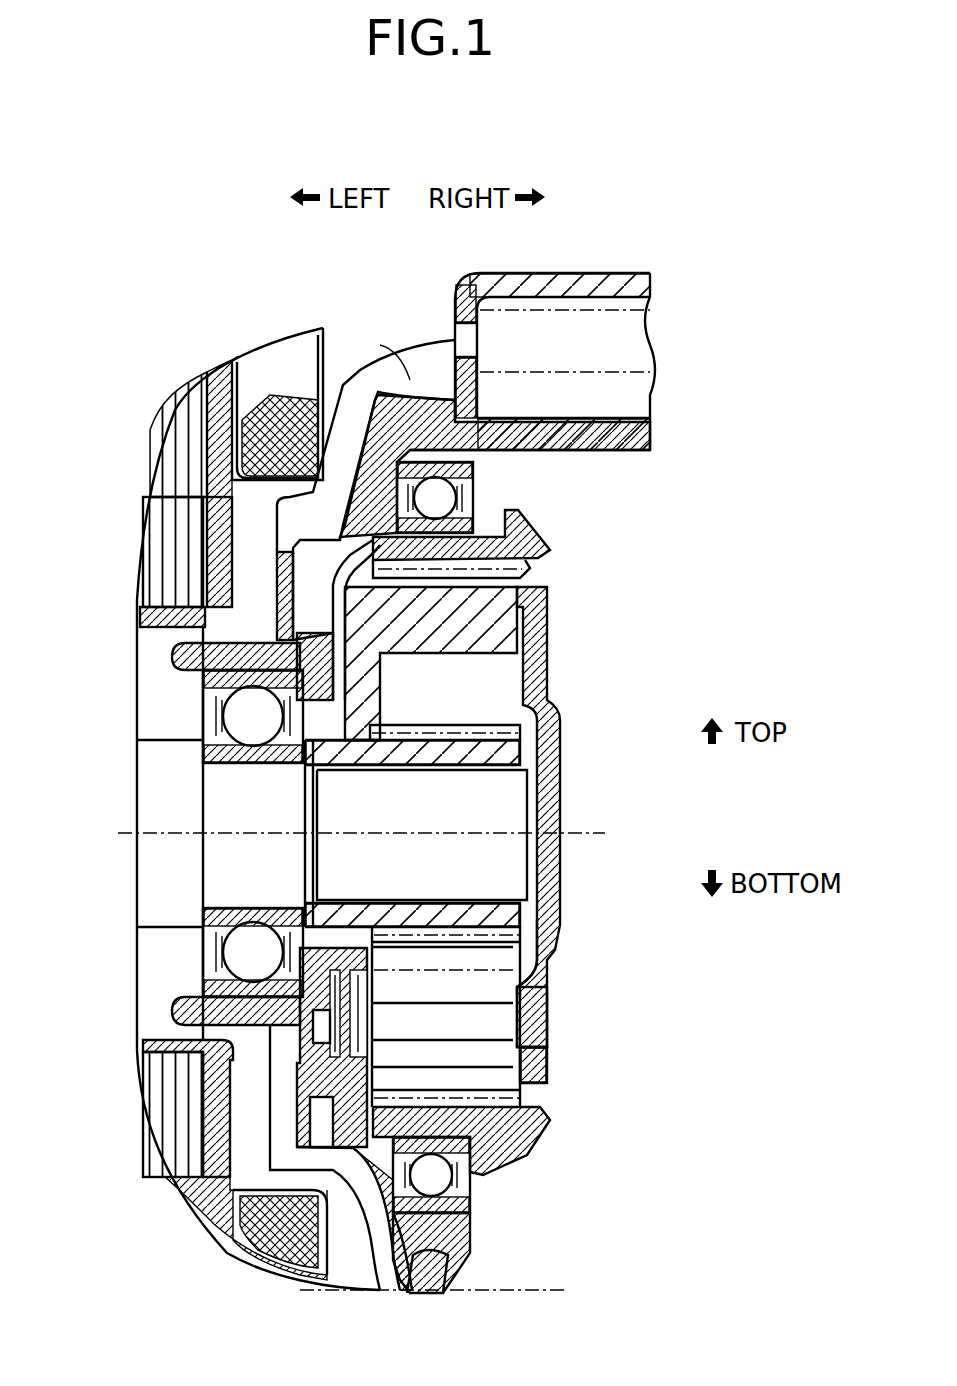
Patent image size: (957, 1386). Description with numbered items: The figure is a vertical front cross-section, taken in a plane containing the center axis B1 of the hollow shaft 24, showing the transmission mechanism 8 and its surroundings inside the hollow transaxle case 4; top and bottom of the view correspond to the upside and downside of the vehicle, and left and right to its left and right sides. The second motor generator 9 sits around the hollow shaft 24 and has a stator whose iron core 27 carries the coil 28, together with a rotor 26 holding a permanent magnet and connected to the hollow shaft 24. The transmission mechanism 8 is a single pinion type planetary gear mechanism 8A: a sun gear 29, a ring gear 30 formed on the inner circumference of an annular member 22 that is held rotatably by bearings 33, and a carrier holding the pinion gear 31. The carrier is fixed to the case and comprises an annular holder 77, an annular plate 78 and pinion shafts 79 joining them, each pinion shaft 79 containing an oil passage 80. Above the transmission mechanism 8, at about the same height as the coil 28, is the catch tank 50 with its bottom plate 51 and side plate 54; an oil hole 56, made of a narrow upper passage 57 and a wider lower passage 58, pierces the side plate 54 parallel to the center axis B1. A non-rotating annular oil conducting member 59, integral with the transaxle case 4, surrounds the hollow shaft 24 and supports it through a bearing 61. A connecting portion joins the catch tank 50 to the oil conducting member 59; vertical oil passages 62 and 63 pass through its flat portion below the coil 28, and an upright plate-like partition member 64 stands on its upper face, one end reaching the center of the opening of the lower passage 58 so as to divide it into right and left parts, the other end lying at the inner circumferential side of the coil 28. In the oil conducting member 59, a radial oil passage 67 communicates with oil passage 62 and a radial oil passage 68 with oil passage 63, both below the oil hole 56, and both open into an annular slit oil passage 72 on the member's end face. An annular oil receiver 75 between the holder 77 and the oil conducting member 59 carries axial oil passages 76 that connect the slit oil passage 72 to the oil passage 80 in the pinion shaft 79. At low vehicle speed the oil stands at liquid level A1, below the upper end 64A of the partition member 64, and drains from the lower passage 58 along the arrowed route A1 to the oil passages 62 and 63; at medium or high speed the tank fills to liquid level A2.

The second motor generator 9 is at (172, 372).
The coil 28 is at (280, 357).
The upper end of partition member 64A is at (413, 360).
The upper passage 57 is at (460, 333).
The oil hole 56 is at (437, 333).
The lower passage 58 is at (417, 393).
The catch tank 50 is at (596, 262).
The liquid level A2 is at (637, 307).
The side plate 54 is at (563, 369).
The liquid level A1 is at (630, 367).
The bottom plate 51 is at (587, 433).
The iron core 27 is at (187, 433).
The bearing 33 is at (488, 477).
The rotor 26 is at (200, 508).
The partition member 64 is at (320, 507).
The annular member 22 is at (503, 540).
The oil passage 62 is at (232, 558).
The ring gear 30 is at (507, 570).
The oil passage 63 is at (205, 595).
The oil conducting member 59 is at (177, 652).
The oil passage 67 is at (275, 650).
The oil passage 68 is at (347, 613).
The holder 77 is at (460, 637).
The planetary gear mechanism 8A is at (565, 678).
The oil passage 76 is at (250, 685).
The sun gear 29 is at (417, 727).
The hollow shaft 24 is at (160, 762).
The center axis B1 is at (570, 833).
The bearing 61 is at (180, 952).
The plate 78 is at (530, 970).
The pinion shaft 79 is at (527, 1010).
The oil passage 80 is at (400, 1020).
The oil receiver 75 is at (300, 1009).
The oil passage 72 is at (300, 1035).
The pinion gear 31 is at (480, 1073).
The transmission mechanism 8 is at (608, 1135).
The transaxle case 4 is at (490, 1234).